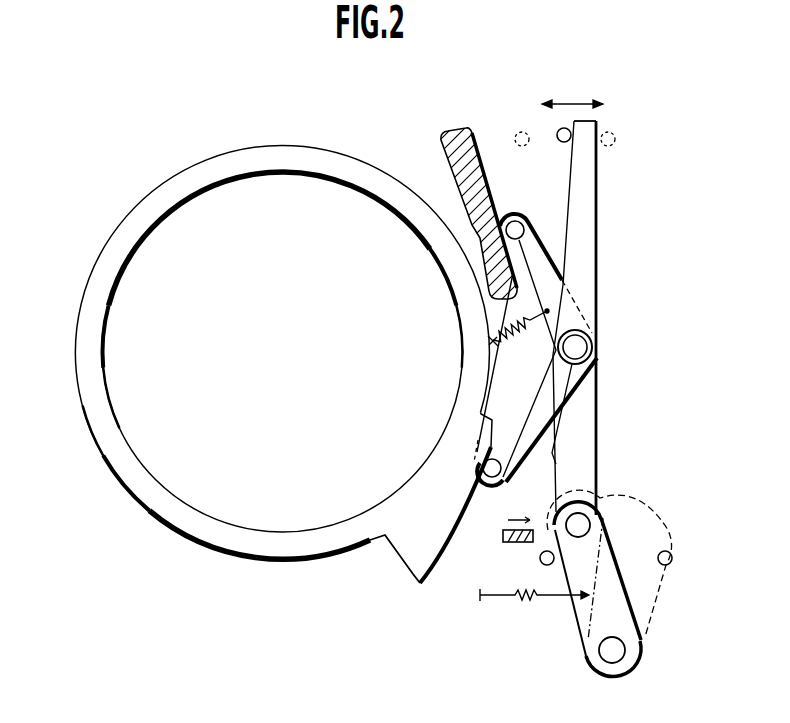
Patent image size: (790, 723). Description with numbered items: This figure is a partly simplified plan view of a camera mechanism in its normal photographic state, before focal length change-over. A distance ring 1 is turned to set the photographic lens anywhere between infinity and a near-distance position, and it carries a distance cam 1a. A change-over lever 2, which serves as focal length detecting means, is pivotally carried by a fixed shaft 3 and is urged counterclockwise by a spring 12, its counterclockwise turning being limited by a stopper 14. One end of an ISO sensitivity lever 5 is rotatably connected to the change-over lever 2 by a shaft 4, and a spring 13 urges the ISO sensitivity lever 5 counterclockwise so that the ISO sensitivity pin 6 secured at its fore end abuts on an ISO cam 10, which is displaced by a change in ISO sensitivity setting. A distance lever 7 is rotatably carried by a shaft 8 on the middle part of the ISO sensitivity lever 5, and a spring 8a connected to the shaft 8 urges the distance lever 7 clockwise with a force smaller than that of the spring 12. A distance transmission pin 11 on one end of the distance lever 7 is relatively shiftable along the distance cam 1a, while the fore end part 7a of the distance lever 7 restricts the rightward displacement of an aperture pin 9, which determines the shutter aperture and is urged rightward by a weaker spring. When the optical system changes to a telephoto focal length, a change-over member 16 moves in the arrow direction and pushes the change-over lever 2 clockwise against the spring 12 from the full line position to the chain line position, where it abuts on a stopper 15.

The distance ring 1 is at (327, 152).
The distance cam 1a is at (418, 577).
The change-over lever 2 is at (574, 613).
The fixed shaft 3 is at (599, 655).
The shaft 4 is at (584, 521).
The ISO sensitivity lever 5 is at (579, 465).
The ISO sensitivity pin 6 is at (513, 216).
The distance lever 7 is at (594, 267).
The fore end part 7a is at (597, 169).
The shaft 8 is at (592, 347).
The spring 8a is at (568, 414).
The aperture pin 9 is at (565, 143).
The ISO cam 10 is at (452, 131).
The distance transmission pin 11 is at (491, 479).
The spring 12 is at (520, 600).
The spring 13 is at (514, 337).
The stopper 14 is at (540, 560).
The stopper 15 is at (671, 565).
The change-over member 16 is at (503, 538).